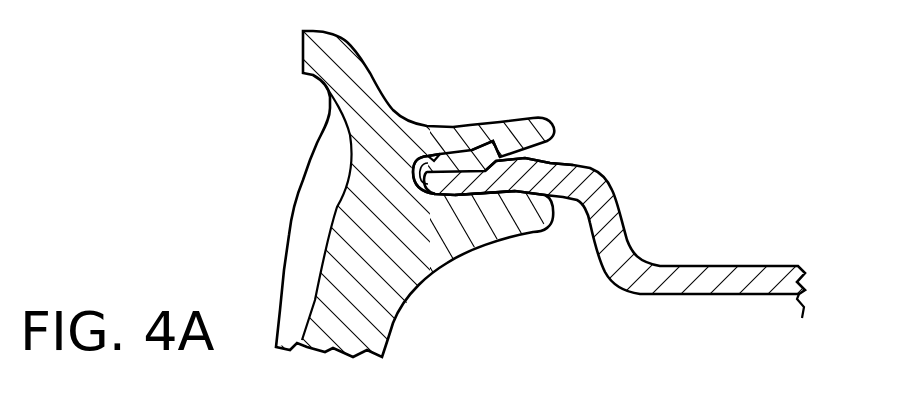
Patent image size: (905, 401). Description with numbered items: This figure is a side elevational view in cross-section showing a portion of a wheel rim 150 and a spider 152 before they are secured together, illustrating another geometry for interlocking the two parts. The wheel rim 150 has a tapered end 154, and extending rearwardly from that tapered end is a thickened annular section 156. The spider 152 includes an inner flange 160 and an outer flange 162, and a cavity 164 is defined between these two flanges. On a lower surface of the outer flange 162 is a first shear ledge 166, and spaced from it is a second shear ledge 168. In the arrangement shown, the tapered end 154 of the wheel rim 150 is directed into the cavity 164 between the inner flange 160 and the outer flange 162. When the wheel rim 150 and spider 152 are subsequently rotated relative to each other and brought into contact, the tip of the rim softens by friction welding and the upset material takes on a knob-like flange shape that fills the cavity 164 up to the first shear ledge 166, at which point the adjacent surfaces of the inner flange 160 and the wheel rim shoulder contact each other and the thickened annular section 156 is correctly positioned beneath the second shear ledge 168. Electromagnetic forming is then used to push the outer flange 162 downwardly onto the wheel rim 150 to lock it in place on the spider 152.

The wheel rim 150 is at (715, 308).
The spider 152 is at (270, 254).
The tapered end 154 is at (457, 183).
The thickened annular section 156 is at (543, 158).
The inner flange 160 is at (515, 220).
The outer flange 162 is at (535, 130).
The cavity 164 is at (426, 157).
The first shear ledge 166 is at (433, 152).
The second shear ledge 168 is at (474, 150).